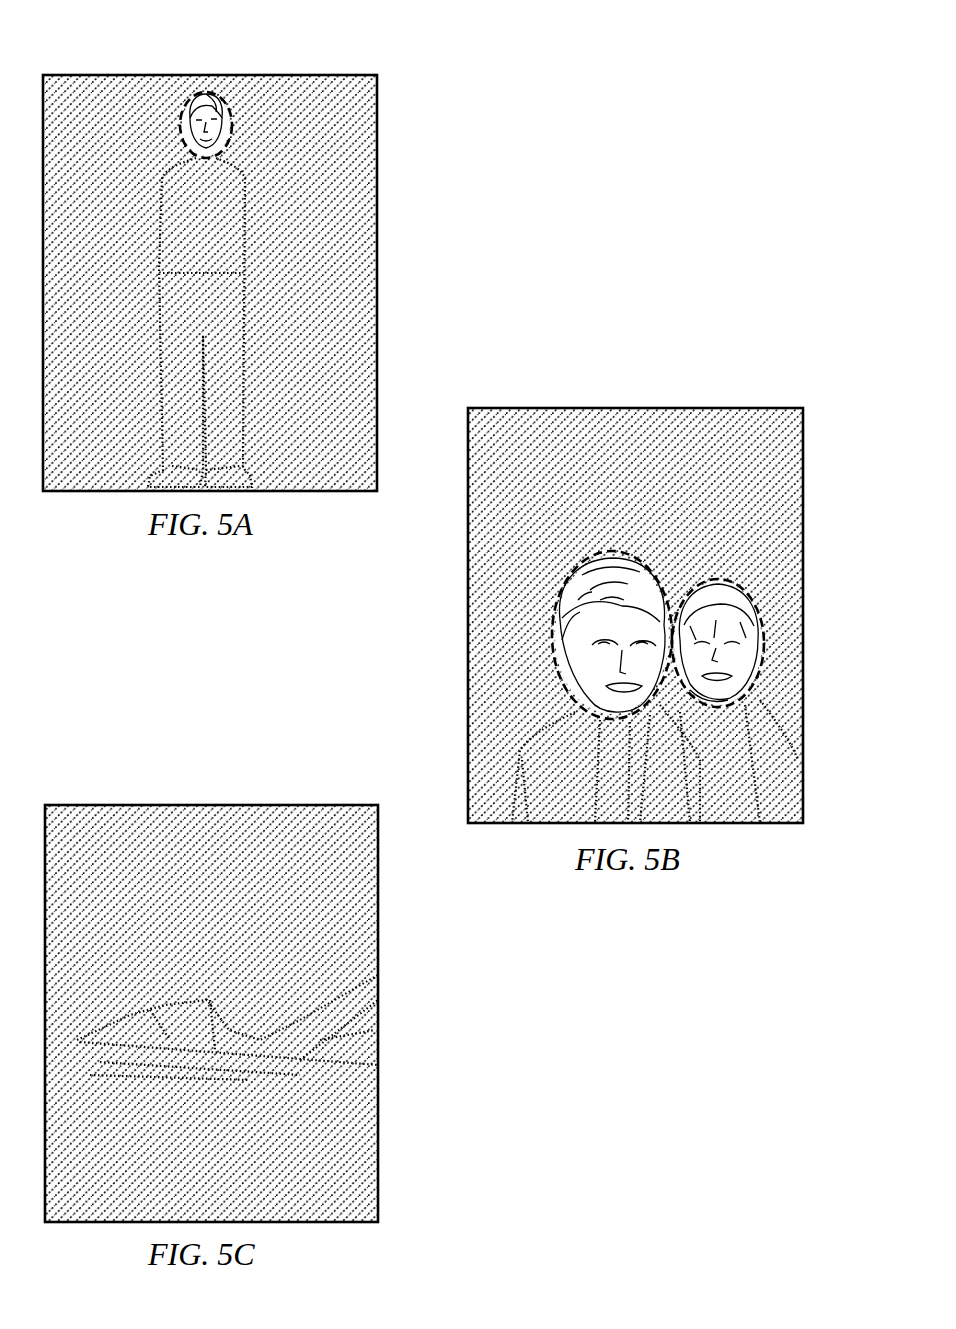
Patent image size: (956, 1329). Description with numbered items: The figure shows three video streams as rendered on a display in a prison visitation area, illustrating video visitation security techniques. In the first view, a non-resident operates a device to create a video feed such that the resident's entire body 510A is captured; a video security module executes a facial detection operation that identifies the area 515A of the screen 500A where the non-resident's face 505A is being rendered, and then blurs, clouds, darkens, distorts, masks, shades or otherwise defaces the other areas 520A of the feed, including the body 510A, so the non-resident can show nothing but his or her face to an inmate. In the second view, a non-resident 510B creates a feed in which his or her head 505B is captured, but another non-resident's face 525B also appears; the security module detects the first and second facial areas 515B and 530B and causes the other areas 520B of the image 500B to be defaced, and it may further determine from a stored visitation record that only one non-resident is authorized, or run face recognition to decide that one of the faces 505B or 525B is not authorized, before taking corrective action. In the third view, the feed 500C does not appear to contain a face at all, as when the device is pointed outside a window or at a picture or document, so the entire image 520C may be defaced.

In FIG. 5A, the screen 500A is at (270, 73).
In FIG. 5A, the non-resident's face 505A is at (203, 94).
In FIG. 5A, the non-resident's body 510A is at (157, 252).
In FIG. 5A, the area of screen 515A is at (186, 92).
In FIG. 5A, the other areas 520A is at (345, 178).
In FIG. 5B, the image 500B is at (700, 405).
In FIG. 5B, the non-resident's head 505B is at (577, 676).
In FIG. 5B, the non-resident 510B is at (540, 824).
In FIG. 5B, the first facial area 515B is at (600, 553).
In FIG. 5B, the other areas 520B is at (640, 445).
In FIG. 5B, the another non-resident's face 525B is at (745, 616).
In FIG. 5B, the second facial area 530B is at (762, 648).
In FIG. 5C, the feed 500C is at (238, 803).
In FIG. 5C, the entire image 520C is at (188, 838).